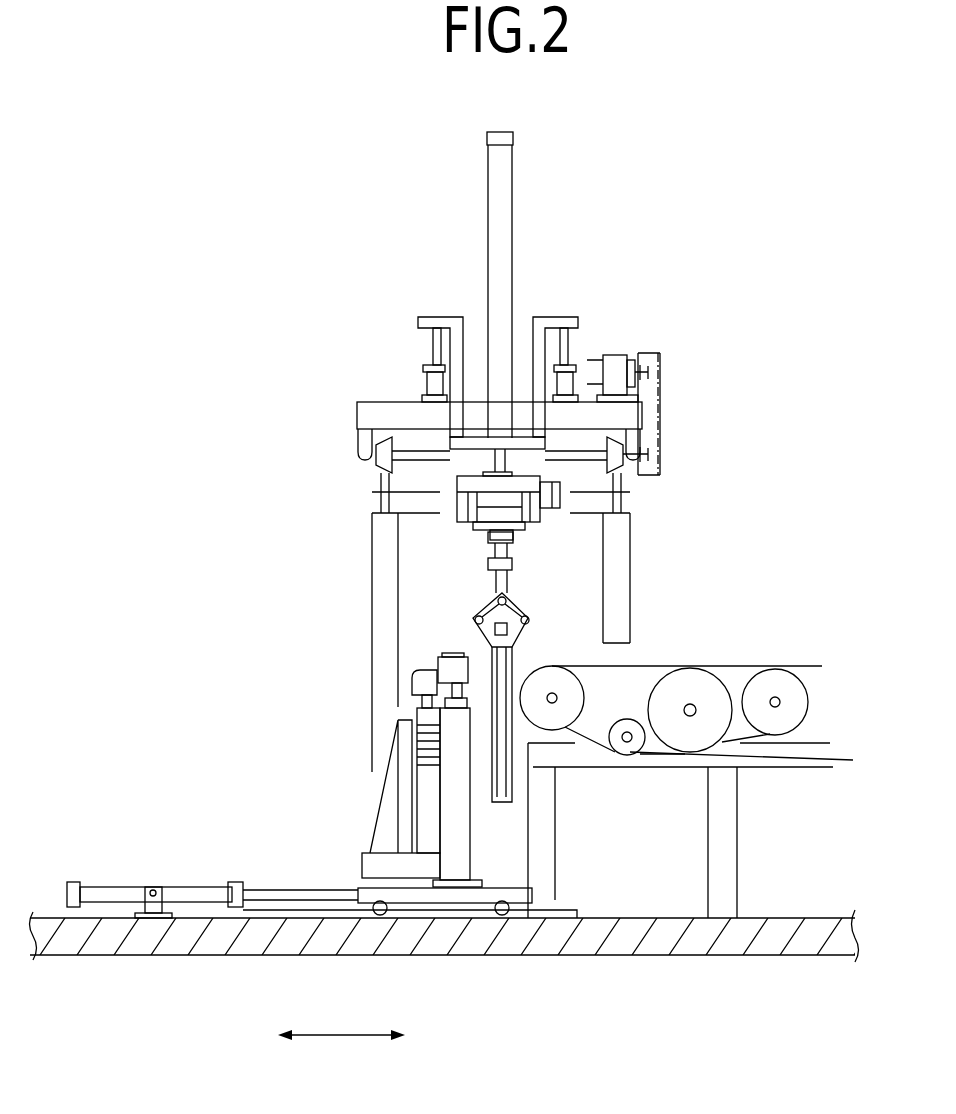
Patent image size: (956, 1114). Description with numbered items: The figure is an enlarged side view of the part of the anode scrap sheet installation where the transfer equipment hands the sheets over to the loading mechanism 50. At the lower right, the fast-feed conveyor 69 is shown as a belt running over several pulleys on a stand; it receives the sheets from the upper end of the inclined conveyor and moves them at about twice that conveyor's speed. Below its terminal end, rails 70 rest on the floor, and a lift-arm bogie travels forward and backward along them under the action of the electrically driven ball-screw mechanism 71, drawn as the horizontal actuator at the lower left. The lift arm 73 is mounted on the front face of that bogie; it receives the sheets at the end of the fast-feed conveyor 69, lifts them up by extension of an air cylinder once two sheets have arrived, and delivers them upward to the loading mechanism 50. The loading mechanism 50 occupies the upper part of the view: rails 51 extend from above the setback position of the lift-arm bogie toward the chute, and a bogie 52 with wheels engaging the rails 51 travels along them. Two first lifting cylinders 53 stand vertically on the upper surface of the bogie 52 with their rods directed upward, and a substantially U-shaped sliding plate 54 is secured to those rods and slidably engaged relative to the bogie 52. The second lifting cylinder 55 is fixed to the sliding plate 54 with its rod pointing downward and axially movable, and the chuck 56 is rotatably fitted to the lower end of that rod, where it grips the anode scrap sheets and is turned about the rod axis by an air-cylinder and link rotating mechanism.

The loading mechanism 50 is at (437, 228).
The rails 51 is at (621, 473).
The bogie 52 is at (355, 412).
The first lifting cylinders 53 is at (421, 377).
The sliding plate 54 is at (425, 317).
The second lifting cylinder 55 is at (507, 199).
The chuck 56 is at (512, 553).
The fast-feed conveyor 69 is at (655, 667).
The rails 70 is at (572, 905).
The ball-screw mechanism 71 is at (193, 884).
The lift arm 73 is at (462, 813).